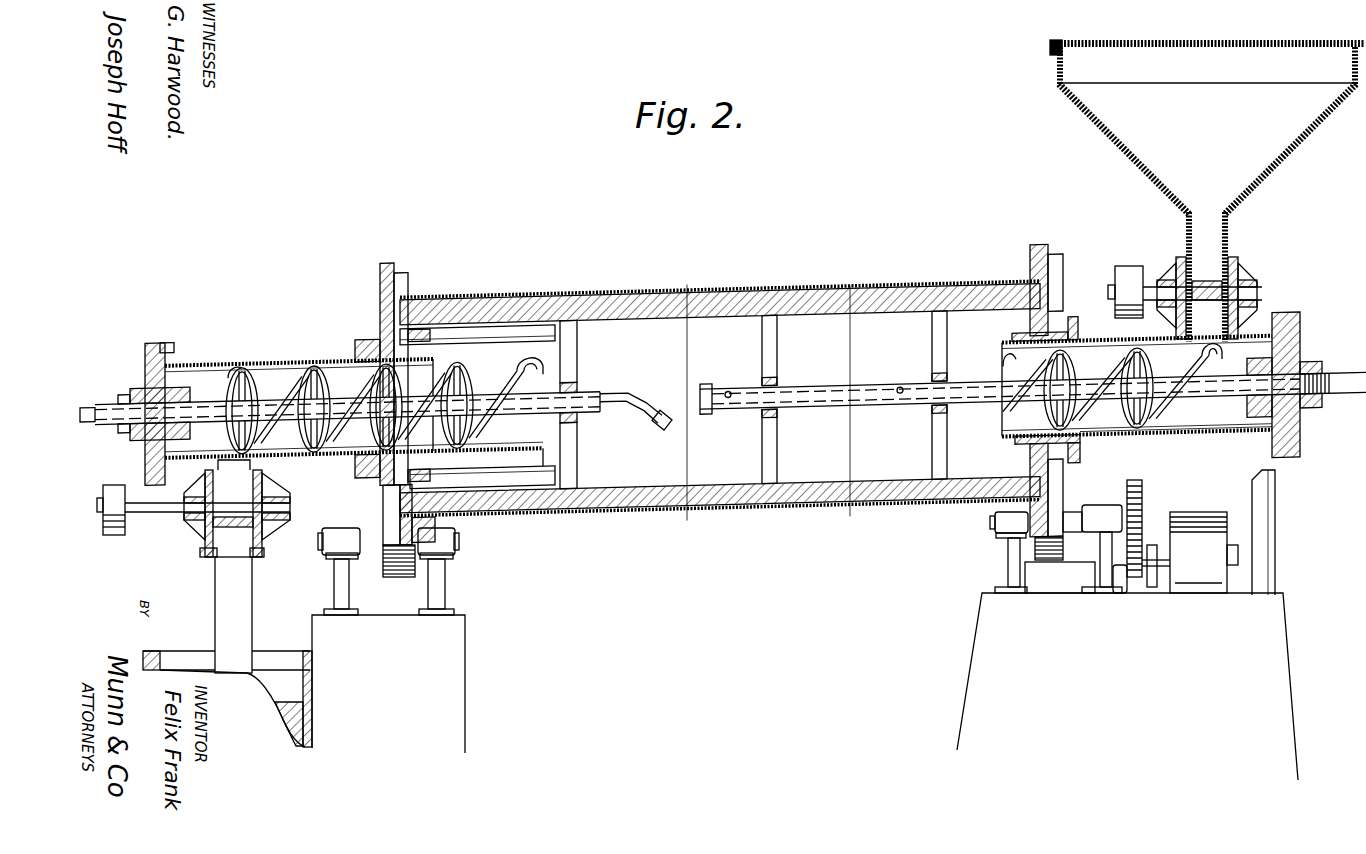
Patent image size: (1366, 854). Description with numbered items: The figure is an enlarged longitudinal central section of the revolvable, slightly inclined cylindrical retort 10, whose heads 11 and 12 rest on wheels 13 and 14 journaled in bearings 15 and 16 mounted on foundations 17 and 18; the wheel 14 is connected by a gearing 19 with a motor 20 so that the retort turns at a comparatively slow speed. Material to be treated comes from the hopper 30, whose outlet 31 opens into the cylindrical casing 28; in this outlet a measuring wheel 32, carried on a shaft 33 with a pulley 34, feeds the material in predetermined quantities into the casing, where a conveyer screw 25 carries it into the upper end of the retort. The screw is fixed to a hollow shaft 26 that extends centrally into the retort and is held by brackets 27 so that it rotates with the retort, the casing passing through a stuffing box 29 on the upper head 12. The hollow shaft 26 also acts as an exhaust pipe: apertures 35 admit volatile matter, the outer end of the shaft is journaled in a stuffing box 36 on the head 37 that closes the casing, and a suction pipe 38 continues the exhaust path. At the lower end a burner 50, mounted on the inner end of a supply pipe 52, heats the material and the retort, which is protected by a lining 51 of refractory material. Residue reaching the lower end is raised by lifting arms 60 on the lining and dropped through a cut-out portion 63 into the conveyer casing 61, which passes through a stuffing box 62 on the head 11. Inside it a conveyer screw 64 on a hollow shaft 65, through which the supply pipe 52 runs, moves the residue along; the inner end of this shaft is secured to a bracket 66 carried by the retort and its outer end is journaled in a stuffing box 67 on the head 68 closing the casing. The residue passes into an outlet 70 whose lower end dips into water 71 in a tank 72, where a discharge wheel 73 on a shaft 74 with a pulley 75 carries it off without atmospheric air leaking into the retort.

The retort 10 is at (748, 293).
The head 11 is at (380, 312).
The head 12 is at (1057, 390).
The wheel 13 is at (388, 570).
The wheel 14 is at (1058, 562).
The bearing 15 is at (440, 571).
The bearing 16 is at (1002, 566).
The foundation 17 is at (460, 692).
The foundation 18 is at (1127, 686).
The gearing 19 is at (1142, 536).
The motor 20 is at (1200, 526).
The conveyer screw 25 is at (1108, 433).
The hollow shaft 26 is at (952, 385).
The brackets 27 is at (777, 350).
The cylindrical casing 28 is at (1210, 438).
The stuffing box 29 is at (1072, 343).
The hopper 30 is at (1207, 127).
The outlet 31 is at (1218, 243).
The measuring wheel 32 is at (1240, 280).
The shaft 33 is at (1148, 286).
The pulley 34 is at (1127, 272).
The apertures 35 is at (728, 410).
The stuffing box 36 is at (1291, 366).
The head 37 is at (1294, 432).
The suction pipe 38 is at (1333, 378).
The burner 50 is at (650, 420).
The lining 51 is at (662, 298).
The supply pipe 52 is at (618, 401).
The lifting arms 60 is at (520, 336).
The conveyer casing 61 is at (205, 369).
The stuffing box 62 is at (368, 470).
The cut-out portion 63 is at (506, 397).
The conveyer screw 64 is at (252, 388).
The hollow shaft 65 is at (349, 407).
The bracket 66 is at (580, 389).
The stuffing box 67 is at (126, 391).
The head 68 is at (152, 345).
The outlet 70 is at (252, 592).
The water 71 is at (298, 722).
The tank 72 is at (272, 661).
The discharge wheel 73 is at (225, 535).
The shaft 74 is at (157, 514).
The pulley 75 is at (118, 537).